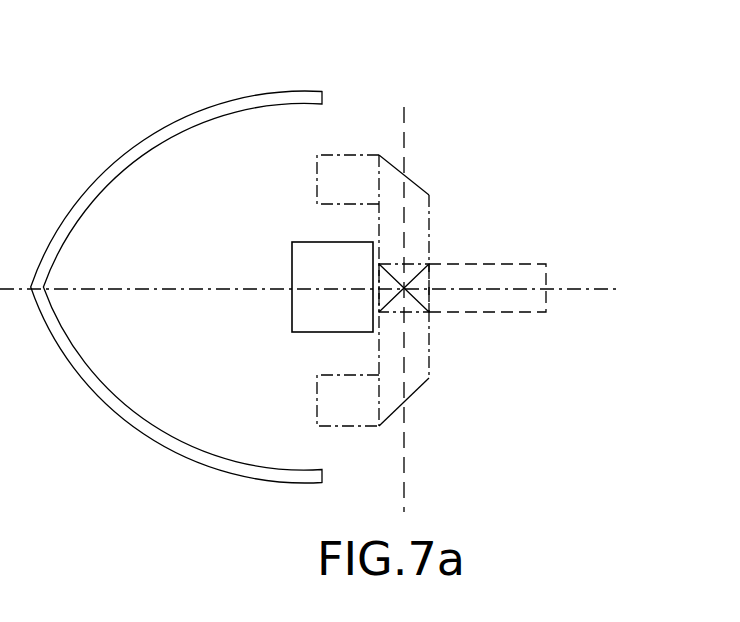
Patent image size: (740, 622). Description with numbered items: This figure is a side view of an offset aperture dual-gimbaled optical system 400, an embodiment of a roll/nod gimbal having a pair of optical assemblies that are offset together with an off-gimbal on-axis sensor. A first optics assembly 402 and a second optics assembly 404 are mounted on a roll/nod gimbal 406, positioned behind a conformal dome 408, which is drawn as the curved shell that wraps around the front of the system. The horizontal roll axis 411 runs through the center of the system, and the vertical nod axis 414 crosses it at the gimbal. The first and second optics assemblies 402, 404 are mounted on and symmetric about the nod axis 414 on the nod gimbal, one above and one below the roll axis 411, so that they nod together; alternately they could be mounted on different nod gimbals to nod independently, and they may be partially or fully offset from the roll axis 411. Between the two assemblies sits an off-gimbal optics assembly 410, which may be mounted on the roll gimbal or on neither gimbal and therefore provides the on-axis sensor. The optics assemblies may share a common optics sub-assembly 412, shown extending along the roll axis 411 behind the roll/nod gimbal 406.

The offset aperture dual-gimbaled optical system 400 is at (87, 106).
The first optics assembly 402 is at (317, 183).
The second optics assembly 404 is at (317, 407).
The roll/nod gimbal 406 is at (429, 218).
The conformal dome 408 is at (95, 393).
The off-gimbal optics assembly 410 is at (292, 268).
The roll axis 411 is at (620, 289).
The common optics sub-assembly 412 is at (503, 313).
The nod axis 414 is at (404, 112).